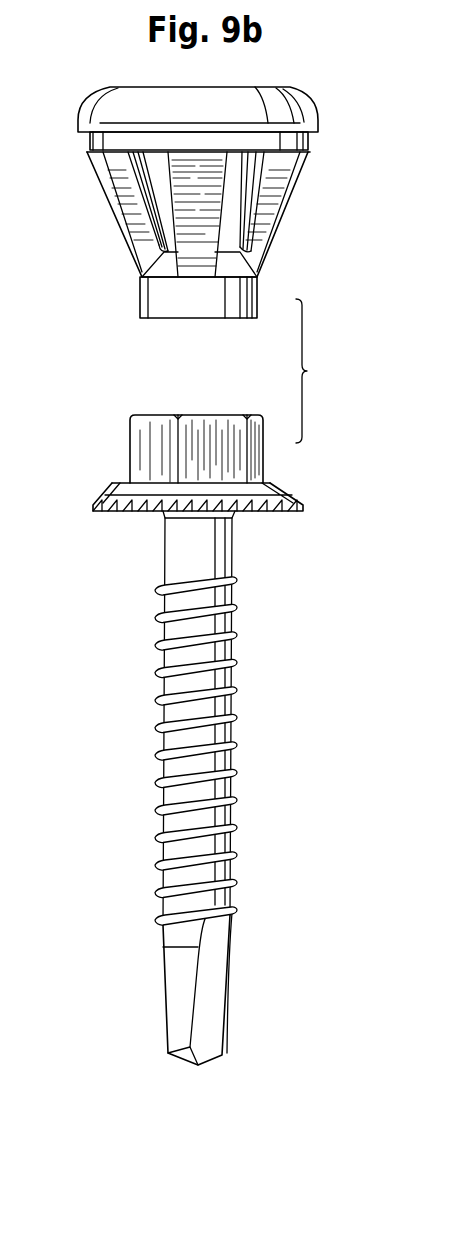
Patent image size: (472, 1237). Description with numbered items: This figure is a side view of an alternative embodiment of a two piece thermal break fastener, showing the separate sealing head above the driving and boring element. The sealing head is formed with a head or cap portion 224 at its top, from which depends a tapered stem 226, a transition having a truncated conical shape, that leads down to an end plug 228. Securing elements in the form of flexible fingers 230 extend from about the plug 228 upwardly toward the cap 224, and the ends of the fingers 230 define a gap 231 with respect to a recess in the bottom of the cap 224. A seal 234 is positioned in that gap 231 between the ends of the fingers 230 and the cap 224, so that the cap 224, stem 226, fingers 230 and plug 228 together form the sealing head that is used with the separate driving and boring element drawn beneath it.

The cap portion 224 is at (138, 85).
The seal 234 is at (100, 145).
The gap 231 is at (303, 152).
The tapered stem 226 is at (160, 190).
The flexible fingers 230 is at (277, 218).
The end plug 228 is at (140, 302).